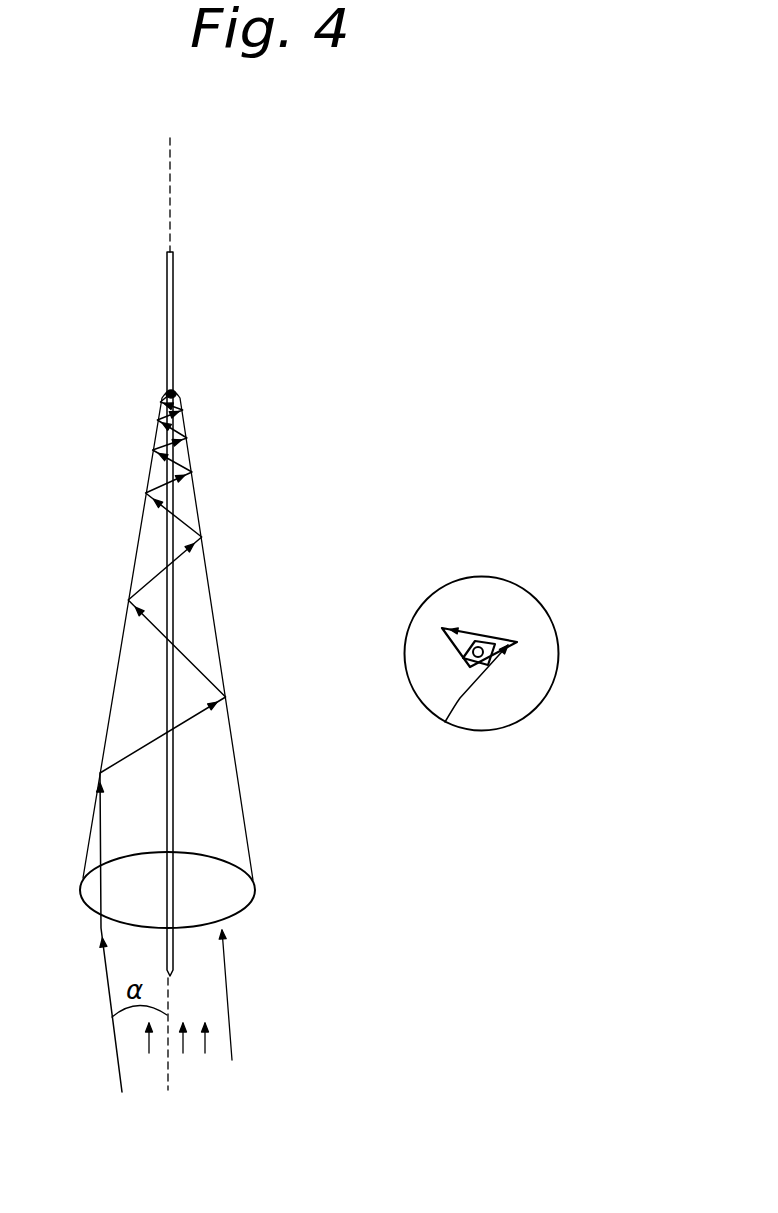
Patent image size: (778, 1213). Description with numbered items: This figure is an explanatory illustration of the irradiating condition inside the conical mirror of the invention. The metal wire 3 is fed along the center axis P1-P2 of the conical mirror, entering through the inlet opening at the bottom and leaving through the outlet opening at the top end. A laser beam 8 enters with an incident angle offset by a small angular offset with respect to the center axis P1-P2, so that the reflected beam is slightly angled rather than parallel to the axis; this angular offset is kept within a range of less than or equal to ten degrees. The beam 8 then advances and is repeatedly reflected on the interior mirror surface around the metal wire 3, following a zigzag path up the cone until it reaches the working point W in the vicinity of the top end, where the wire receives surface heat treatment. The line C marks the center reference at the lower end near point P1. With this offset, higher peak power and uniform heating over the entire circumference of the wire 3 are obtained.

The metal wire 3 is at (166, 318).
The laser beam 8 is at (112, 1027).
The working point W is at (160, 412).
The center axis C is at (182, 1071).
The center axis end point P1 is at (169, 1120).
The center axis end point P2 is at (170, 129).